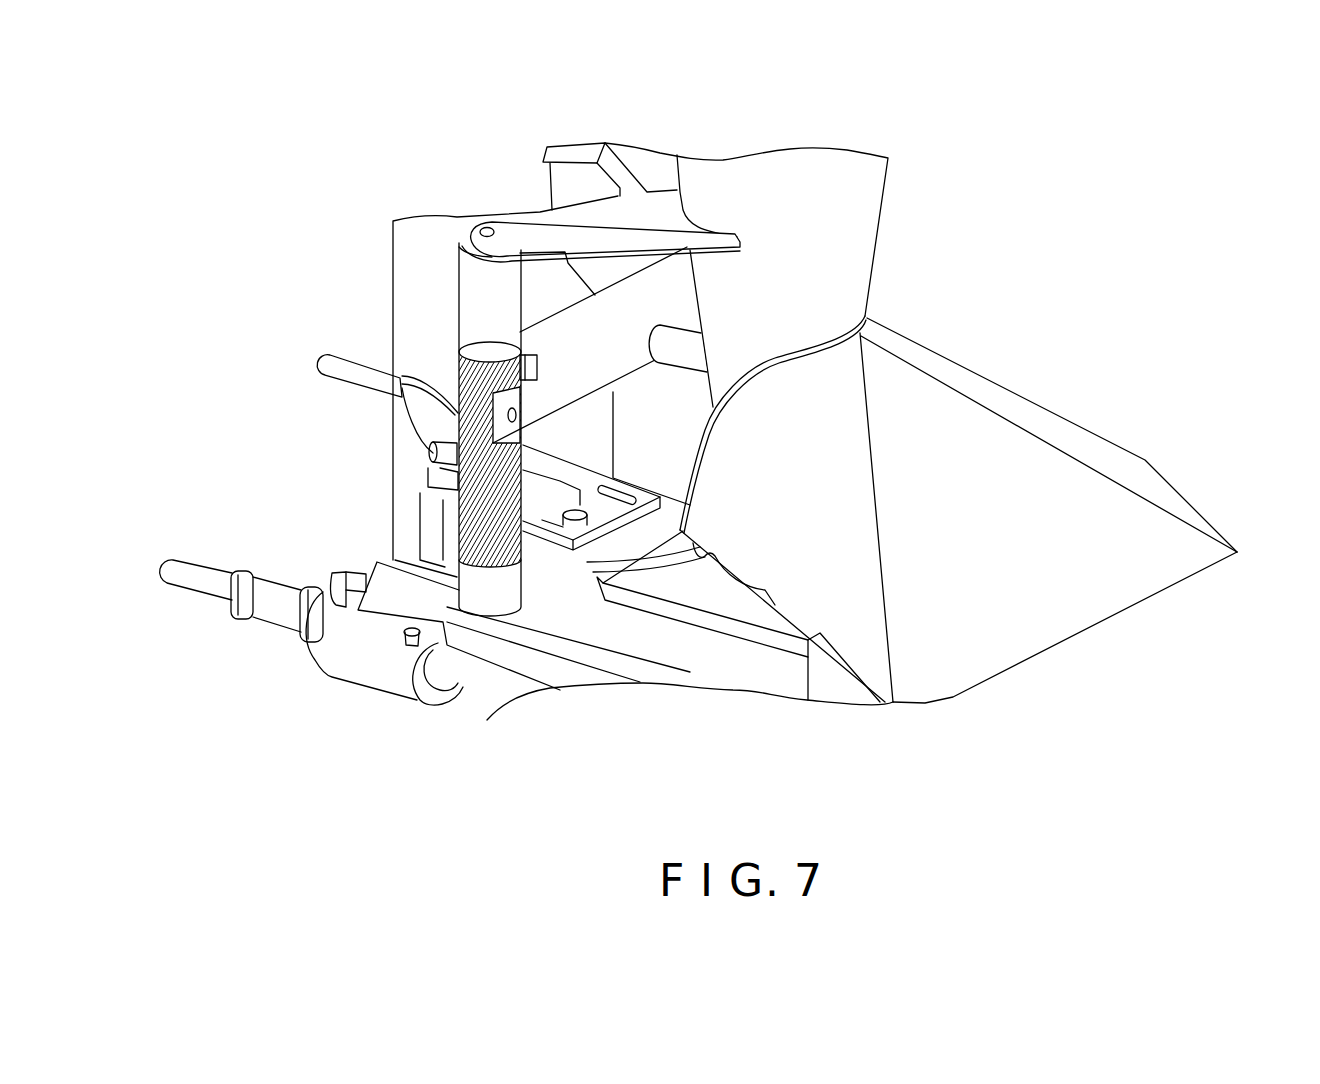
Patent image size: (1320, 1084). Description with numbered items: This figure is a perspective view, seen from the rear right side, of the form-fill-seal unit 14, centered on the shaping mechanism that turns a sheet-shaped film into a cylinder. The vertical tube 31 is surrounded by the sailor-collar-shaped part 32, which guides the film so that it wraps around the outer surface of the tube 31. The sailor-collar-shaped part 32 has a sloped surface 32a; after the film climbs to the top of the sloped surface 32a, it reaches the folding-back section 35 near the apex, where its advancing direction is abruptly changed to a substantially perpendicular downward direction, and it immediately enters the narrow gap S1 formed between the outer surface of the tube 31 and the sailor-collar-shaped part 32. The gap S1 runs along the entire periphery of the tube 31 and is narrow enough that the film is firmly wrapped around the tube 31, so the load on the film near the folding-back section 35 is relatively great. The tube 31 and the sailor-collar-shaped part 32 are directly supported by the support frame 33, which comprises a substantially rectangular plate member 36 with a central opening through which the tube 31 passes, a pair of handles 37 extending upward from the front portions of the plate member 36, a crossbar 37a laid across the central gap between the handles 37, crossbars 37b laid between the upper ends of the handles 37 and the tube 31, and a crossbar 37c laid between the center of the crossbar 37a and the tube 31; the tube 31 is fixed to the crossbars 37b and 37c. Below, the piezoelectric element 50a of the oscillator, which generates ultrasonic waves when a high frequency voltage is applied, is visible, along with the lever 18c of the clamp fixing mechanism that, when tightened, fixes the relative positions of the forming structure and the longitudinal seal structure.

The cutting unit 14 is at (935, 142).
The lever 18c is at (335, 360).
The tube 31 is at (800, 183).
The sailor-collar-shaped part 32 is at (1026, 354).
The sloped surface 32a is at (972, 442).
The support frame 33 is at (455, 166).
The folding-back section 35 is at (880, 360).
The plate member 36 is at (630, 638).
The handle 37 is at (477, 287).
The crossbar 37a is at (560, 357).
The crossbar 37b is at (540, 227).
The crossbar 37c is at (690, 352).
The piezoelectric element 50a is at (372, 668).
The gap S1 is at (867, 316).